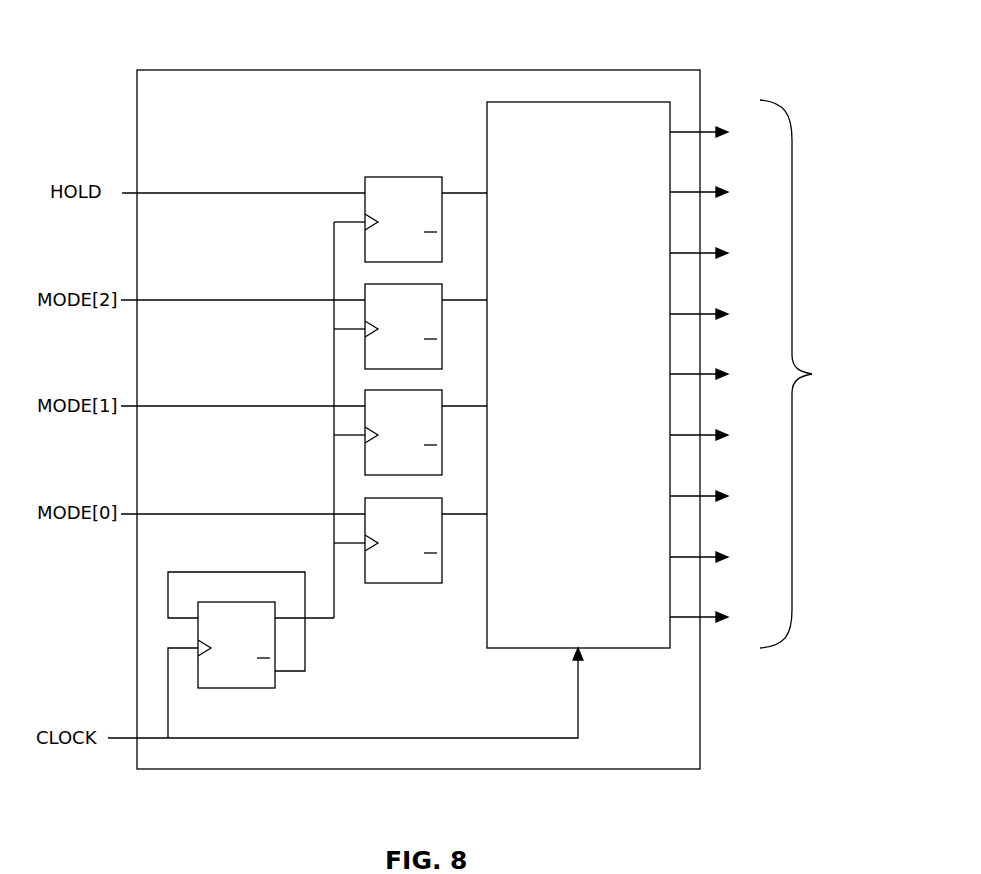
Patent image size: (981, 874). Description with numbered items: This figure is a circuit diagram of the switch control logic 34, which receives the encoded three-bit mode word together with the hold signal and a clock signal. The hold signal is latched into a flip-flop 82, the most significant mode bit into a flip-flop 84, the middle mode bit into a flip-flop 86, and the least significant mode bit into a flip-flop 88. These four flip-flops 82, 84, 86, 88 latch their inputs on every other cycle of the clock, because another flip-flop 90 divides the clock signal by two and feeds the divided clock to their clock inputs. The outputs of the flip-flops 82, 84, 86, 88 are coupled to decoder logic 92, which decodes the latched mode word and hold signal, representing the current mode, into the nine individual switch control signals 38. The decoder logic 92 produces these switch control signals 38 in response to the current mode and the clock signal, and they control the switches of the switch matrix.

The switch control logic 34 is at (216, 70).
The switch control signals 38 is at (812, 374).
The flip-flop 82 is at (425, 262).
The flip-flop 84 is at (425, 369).
The flip-flop 86 is at (425, 475).
The flip-flop 88 is at (425, 583).
The flip-flop 90 is at (248, 688).
The decoder logic 92 is at (520, 650).